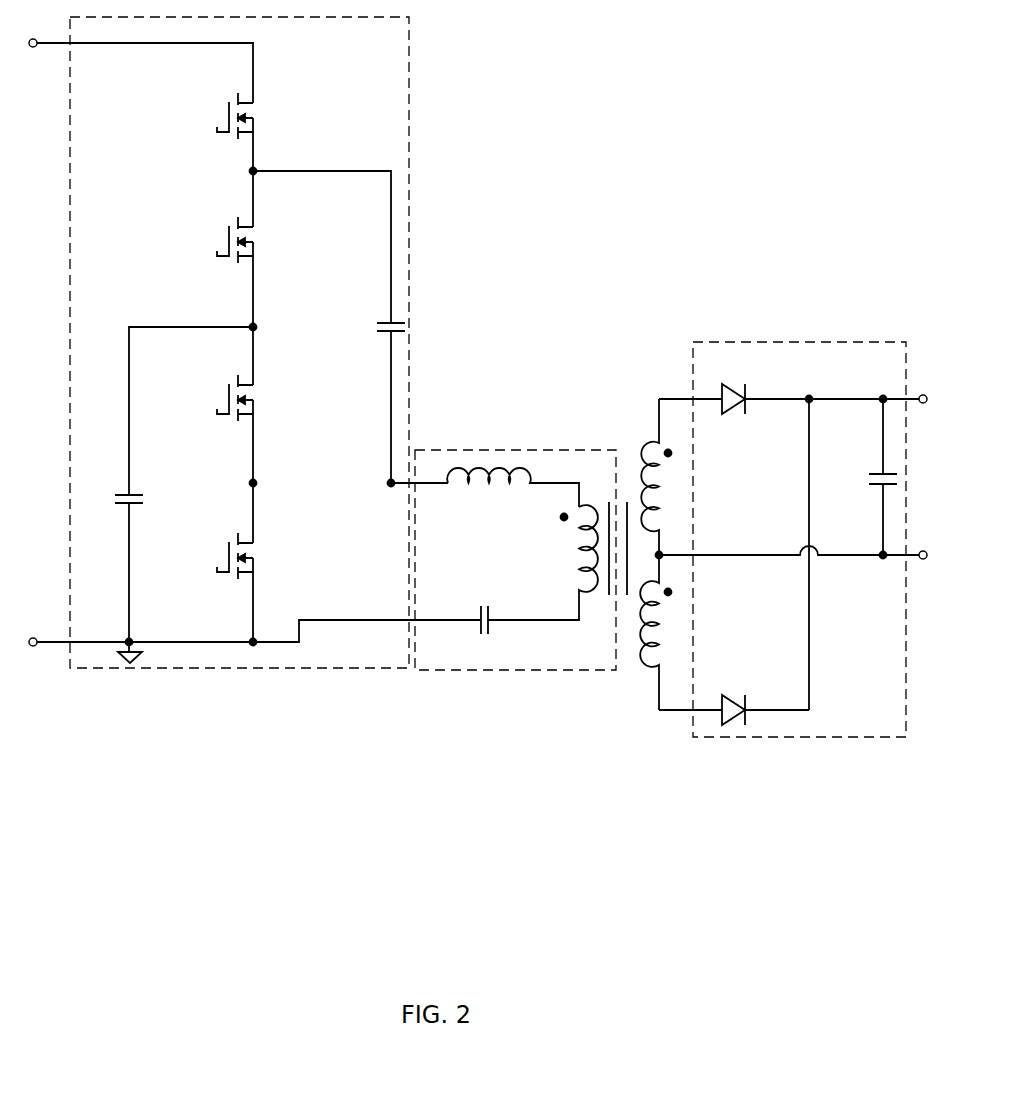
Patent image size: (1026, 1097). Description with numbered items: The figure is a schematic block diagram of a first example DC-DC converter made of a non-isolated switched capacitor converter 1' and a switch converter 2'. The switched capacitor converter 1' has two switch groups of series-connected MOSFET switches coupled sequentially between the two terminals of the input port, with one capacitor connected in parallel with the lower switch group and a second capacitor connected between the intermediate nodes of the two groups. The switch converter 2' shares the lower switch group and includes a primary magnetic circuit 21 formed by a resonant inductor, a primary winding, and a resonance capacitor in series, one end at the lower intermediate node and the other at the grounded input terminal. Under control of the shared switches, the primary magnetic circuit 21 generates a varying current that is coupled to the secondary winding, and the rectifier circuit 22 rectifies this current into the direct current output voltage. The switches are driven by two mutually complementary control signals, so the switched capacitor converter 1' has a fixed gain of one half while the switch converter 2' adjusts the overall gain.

The switched capacitor converter 1' is at (246, 342).
The switch converter 2' is at (648, 455).
The primary magnetic circuit 21 is at (532, 675).
The rectifier circuit 22 is at (767, 739).